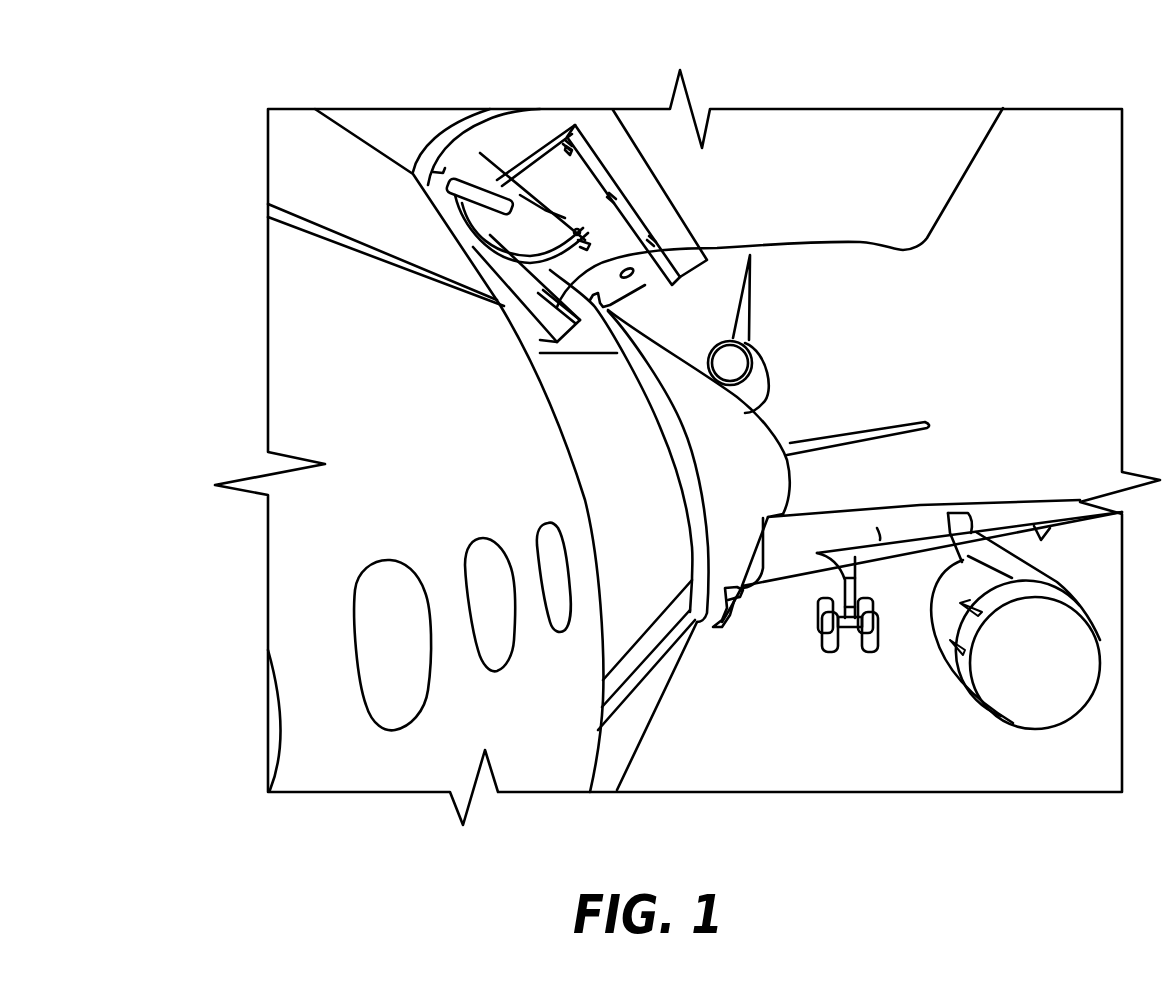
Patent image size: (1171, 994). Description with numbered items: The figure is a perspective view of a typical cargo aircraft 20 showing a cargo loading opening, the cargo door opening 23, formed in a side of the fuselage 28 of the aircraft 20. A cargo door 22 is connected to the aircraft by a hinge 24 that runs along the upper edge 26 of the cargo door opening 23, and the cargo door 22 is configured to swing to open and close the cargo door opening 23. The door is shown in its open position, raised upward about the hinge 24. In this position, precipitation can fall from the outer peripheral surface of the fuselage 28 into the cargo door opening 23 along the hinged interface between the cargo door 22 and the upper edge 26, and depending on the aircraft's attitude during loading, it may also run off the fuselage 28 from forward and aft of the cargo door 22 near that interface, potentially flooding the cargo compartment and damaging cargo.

The cargo aircraft 20 is at (246, 353).
The cargo door 22 is at (994, 144).
The cargo door opening 23 is at (630, 467).
The hinge 24 is at (500, 178).
The upper edge 26 is at (655, 253).
The fuselage 28 is at (295, 162).